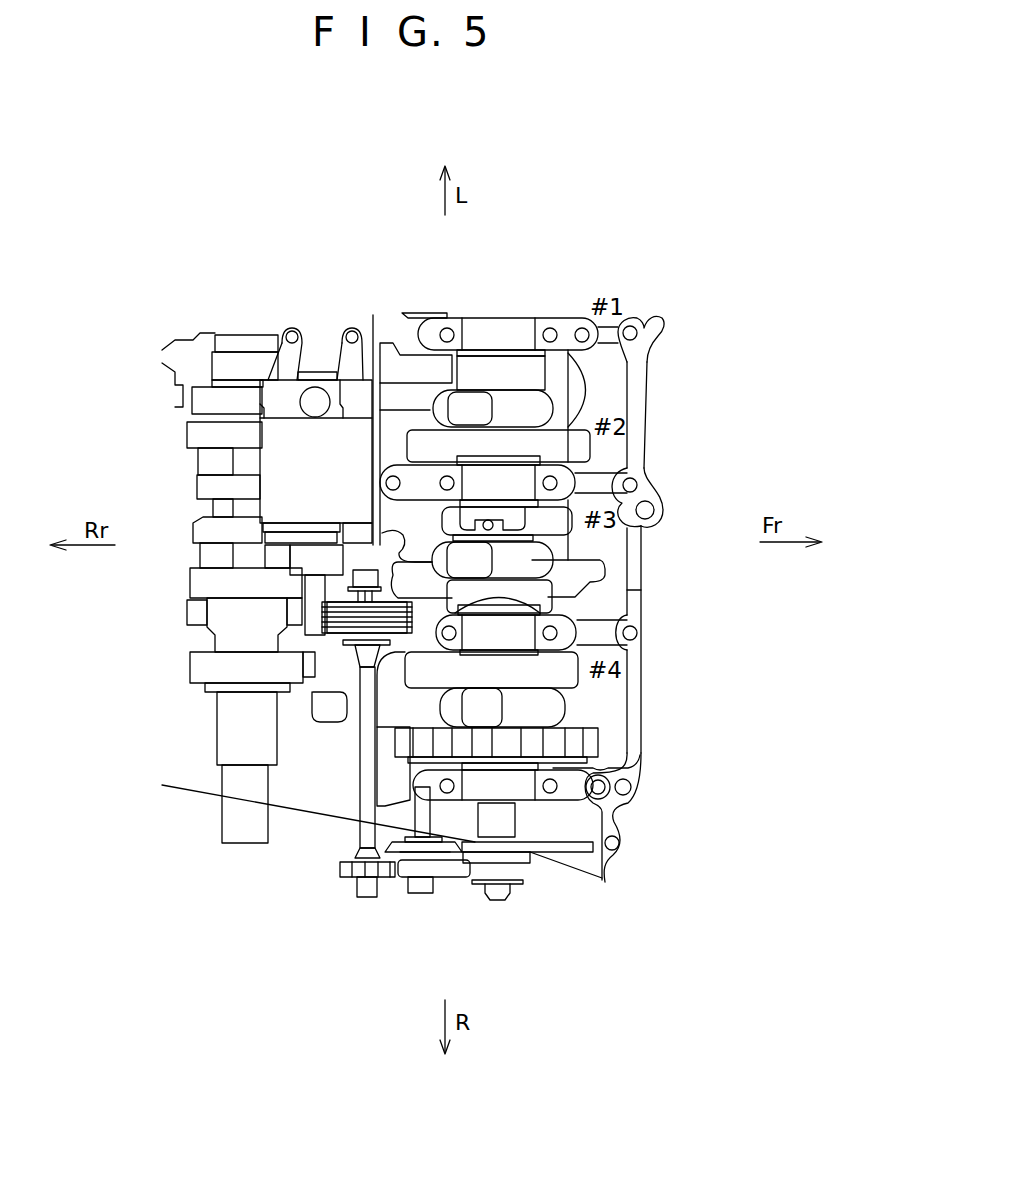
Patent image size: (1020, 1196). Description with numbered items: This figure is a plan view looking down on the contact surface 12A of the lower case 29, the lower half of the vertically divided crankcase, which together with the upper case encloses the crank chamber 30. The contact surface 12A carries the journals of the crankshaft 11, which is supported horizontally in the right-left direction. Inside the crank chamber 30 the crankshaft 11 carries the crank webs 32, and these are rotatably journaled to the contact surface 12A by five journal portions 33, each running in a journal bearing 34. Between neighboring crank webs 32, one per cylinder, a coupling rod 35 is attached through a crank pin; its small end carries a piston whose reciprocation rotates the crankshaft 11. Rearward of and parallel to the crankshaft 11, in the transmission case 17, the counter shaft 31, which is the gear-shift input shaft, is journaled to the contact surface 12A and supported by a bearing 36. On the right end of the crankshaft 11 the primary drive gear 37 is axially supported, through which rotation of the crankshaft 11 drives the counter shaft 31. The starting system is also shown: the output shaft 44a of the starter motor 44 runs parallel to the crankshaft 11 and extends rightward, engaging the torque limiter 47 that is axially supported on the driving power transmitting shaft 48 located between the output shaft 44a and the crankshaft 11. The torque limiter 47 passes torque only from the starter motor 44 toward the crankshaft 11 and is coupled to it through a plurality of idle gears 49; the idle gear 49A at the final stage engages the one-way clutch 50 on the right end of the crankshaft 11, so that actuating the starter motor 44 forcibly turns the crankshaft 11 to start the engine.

The crankshaft 11 is at (513, 332).
The contact surface 12A is at (637, 597).
The transmission case 17 is at (328, 790).
The lower case 29 is at (650, 357).
The crank chamber 30 is at (605, 393).
The counter shaft 31 is at (228, 823).
The crank web 32 is at (530, 543).
The journal portion 33 is at (502, 333).
The journal bearing 34 is at (489, 559).
The coupling rod 35 is at (475, 400).
The bearing 36 is at (232, 357).
The primary drive gear 37 is at (573, 747).
The starter motor 44 is at (277, 473).
The output shaft 44a is at (313, 615).
The torque limiter 47 is at (337, 637).
The driving power transmitting shaft 48 is at (358, 808).
The idle gear 49 is at (407, 873).
The idle gear at a final stage 49A is at (447, 852).
The one-way clutch 50 is at (530, 860).